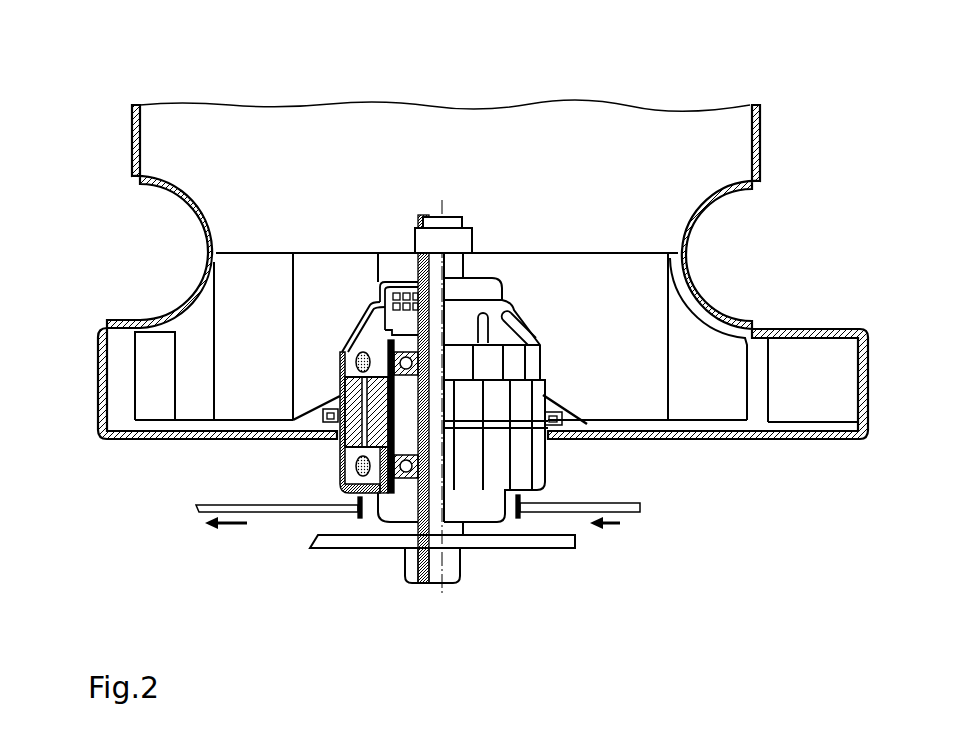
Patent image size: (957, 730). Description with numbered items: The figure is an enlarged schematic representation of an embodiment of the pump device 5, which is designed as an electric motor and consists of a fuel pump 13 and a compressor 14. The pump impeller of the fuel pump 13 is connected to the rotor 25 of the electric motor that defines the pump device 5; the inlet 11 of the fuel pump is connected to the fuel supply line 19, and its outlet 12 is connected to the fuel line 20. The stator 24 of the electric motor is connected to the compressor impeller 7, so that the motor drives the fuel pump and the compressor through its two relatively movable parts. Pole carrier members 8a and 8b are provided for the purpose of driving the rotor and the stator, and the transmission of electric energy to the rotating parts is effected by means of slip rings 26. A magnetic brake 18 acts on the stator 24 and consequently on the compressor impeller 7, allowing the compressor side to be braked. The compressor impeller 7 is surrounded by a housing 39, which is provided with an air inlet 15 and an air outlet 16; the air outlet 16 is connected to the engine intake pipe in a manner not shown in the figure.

The pump device 5 is at (524, 232).
The compressor impeller 7 is at (260, 296).
The pole carrier member 8a is at (352, 466).
The pole carrier member 8b is at (342, 360).
The inlet 11 is at (506, 507).
The outlet 12 is at (372, 506).
The fuel pump 13 is at (470, 507).
The compressor 14 is at (464, 336).
The air inlet 15 is at (333, 183).
The air outlet 16 is at (807, 388).
The magnetic brake 18 is at (587, 424).
The fuel supply line 19 is at (632, 512).
The fuel line 20 is at (195, 507).
The stator 24 is at (340, 401).
The rotor 25 is at (340, 397).
The slip rings 26 is at (397, 287).
The housing 39 is at (762, 157).